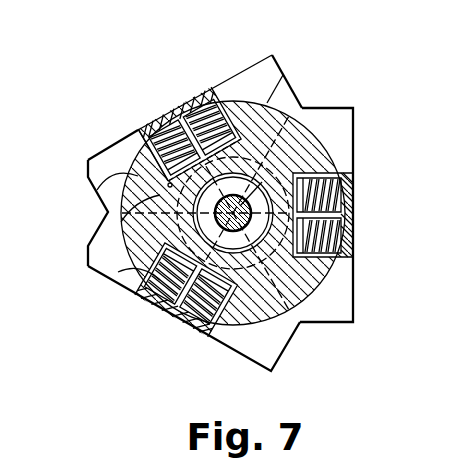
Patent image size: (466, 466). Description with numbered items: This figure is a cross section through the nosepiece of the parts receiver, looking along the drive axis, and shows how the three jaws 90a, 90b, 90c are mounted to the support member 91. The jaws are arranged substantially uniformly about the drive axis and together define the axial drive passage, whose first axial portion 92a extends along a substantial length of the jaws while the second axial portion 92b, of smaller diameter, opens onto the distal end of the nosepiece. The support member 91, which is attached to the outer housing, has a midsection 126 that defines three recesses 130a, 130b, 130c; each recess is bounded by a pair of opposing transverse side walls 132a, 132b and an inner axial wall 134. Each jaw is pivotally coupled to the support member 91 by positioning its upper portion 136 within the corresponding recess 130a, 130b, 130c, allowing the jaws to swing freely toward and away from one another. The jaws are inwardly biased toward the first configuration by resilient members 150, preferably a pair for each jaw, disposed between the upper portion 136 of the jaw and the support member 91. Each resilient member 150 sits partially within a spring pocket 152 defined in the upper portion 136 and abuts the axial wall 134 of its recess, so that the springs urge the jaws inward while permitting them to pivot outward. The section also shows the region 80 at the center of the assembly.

The rotor body 80 is at (292, 336).
The jaw 90a is at (253, 366).
The jaw 90b is at (138, 128).
The jaw 90c is at (356, 140).
The support member 91 is at (274, 95).
The first axial portion 92a is at (118, 272).
The second axial portion 92b is at (118, 222).
The midsection 126 is at (103, 180).
The recess 130a is at (176, 326).
The recess 130b is at (203, 90).
The recess 130c is at (352, 218).
The transverse side wall 132a is at (226, 80).
The transverse side wall 132b is at (133, 152).
The inner axial wall 134 is at (178, 184).
The upper portion 136 is at (356, 203).
The resilient member 150 is at (157, 136).
The spring pocket 152 is at (190, 128).